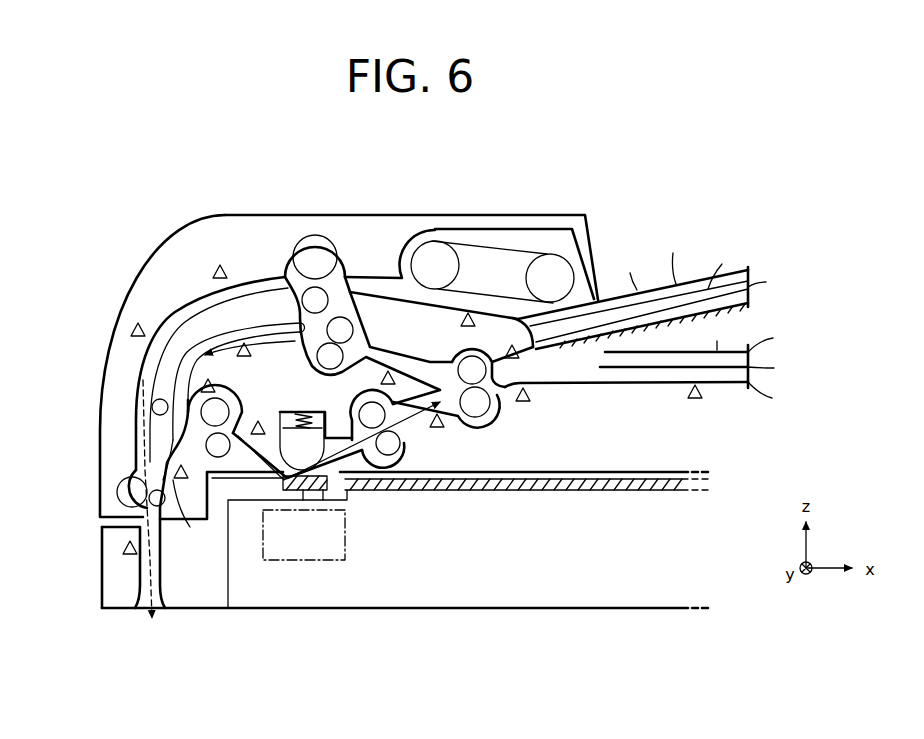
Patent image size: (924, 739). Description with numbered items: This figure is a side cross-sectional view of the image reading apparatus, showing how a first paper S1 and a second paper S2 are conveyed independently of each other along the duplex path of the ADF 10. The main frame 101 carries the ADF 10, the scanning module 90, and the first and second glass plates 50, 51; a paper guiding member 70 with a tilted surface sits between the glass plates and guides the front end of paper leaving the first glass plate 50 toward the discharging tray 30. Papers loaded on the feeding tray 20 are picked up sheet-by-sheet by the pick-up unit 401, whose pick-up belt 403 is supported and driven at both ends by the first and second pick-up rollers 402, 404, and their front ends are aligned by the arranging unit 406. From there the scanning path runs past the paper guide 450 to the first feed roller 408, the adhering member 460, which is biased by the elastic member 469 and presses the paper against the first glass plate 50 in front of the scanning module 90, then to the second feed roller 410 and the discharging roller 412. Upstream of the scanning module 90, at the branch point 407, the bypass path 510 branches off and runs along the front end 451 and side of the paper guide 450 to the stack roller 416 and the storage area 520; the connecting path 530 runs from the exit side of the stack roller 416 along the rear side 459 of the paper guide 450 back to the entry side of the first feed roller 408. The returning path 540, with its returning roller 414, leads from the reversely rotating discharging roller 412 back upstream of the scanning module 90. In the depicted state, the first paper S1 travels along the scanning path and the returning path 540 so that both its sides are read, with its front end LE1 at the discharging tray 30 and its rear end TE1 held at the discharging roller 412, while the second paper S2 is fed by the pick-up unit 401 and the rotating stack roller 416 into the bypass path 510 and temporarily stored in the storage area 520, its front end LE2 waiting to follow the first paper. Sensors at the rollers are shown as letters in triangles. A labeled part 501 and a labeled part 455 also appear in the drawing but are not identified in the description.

The ADF 10 is at (178, 200).
The feeding tray 20 is at (750, 305).
The discharging tray 30 is at (647, 373).
The first glass plate 50 is at (303, 480).
The second glass plate 51 is at (605, 491).
The paper guiding member 70 is at (340, 497).
The scanning module 90 is at (304, 563).
The main frame 101 is at (104, 600).
The pick-up unit 401 is at (496, 217).
The first pick-up roller 402 is at (557, 268).
The pick-up belt 403 is at (496, 254).
The second pick-up roller 404 is at (433, 244).
The arranging unit 406 is at (314, 240).
The branch point 407 is at (230, 309).
The first feed roller 408 is at (220, 410).
The second feed roller 410 is at (378, 416).
The discharging roller 412 is at (486, 408).
The returning roller 414 is at (347, 326).
The stack roller 416 is at (125, 493).
The paper guide 450 is at (148, 373).
The front end of the paper guide 451 is at (218, 302).
The guide roller 455 is at (152, 407).
The rear side of the paper guide 459 is at (158, 447).
The adhering member 460 is at (286, 430).
The elastic member 469 is at (307, 417).
The housing cover 501 is at (238, 222).
The bypass path 510 is at (167, 318).
The storage area 520 is at (144, 610).
The connecting path 530 is at (178, 505).
The returning path 540 is at (427, 360).
The first paper S1 is at (365, 450).
The second paper S2 is at (162, 583).
The rear end of the first paper TE1 is at (293, 343).
The front end of the first paper LE1 is at (438, 410).
The front end of the second paper LE2 is at (153, 625).